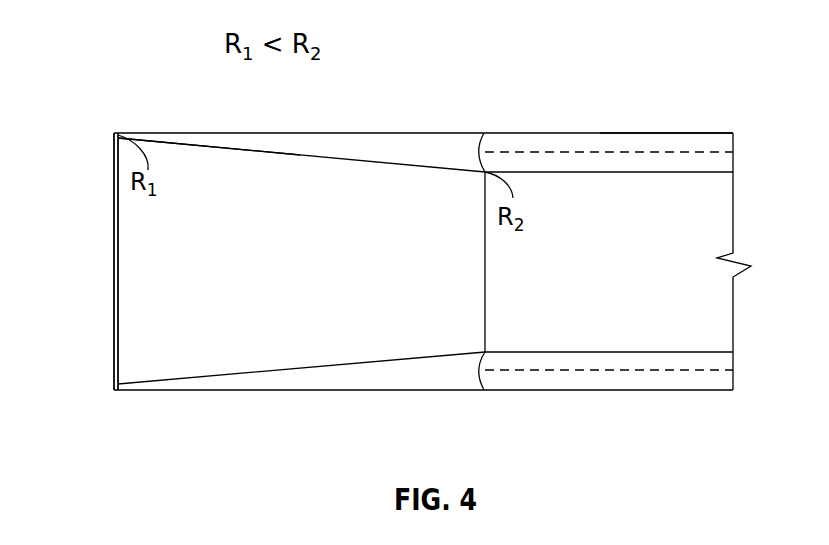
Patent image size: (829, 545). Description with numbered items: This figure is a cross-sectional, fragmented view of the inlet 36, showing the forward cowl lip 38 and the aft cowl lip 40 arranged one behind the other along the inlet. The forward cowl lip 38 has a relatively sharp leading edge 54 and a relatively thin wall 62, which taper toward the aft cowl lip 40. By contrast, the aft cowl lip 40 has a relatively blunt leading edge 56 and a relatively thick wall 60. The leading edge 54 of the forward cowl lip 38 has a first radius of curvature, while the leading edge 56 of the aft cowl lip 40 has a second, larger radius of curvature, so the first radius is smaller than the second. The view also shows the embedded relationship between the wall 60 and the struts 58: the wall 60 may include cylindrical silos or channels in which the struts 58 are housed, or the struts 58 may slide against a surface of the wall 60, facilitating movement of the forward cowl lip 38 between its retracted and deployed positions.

The inlet 36 is at (366, 417).
The forward cowl lip 38 is at (293, 131).
The aft cowl lip 40 is at (558, 132).
The leading edge 54 is at (114, 133).
The leading edge 56 is at (476, 152).
The struts 58 is at (620, 153).
The wall 60 is at (645, 142).
The wall 62 is at (242, 143).